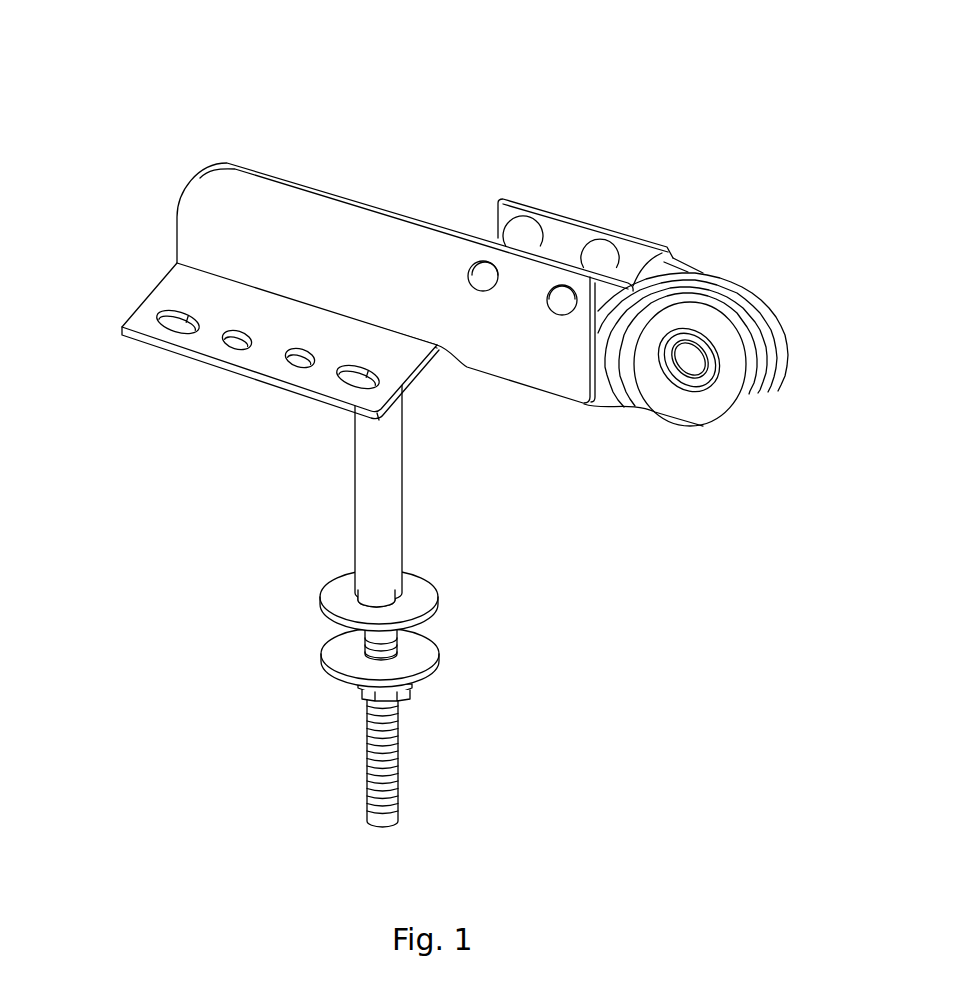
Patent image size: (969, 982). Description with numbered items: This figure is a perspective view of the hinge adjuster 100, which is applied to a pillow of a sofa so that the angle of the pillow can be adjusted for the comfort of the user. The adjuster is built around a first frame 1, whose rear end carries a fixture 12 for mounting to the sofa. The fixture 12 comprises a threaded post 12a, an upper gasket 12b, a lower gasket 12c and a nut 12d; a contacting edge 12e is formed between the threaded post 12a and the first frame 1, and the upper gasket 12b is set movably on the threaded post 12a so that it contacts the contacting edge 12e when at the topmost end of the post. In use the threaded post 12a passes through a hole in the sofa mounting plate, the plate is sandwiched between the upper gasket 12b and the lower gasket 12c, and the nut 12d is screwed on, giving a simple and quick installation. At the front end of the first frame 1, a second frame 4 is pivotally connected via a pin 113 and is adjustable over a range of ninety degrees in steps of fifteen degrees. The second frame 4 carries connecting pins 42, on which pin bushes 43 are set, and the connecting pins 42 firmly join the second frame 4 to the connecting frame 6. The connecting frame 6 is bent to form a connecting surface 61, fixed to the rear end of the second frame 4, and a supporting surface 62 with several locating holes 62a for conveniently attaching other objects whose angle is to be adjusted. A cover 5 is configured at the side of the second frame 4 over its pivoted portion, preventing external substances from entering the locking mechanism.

The hinge adjuster 100 is at (178, 48).
The first frame 1 is at (388, 493).
The pin 113 is at (691, 362).
The fixture 12 is at (232, 577).
The threaded post 12a is at (373, 738).
The upper gasket 12b is at (350, 613).
The lower gasket 12c is at (347, 658).
The nut 12d is at (362, 693).
The contacting edge 12e is at (368, 593).
The second frame 4 is at (662, 252).
The connecting pins 42 is at (558, 305).
The pin bushes 43 is at (597, 253).
The cover 5 is at (725, 400).
The connecting frame 6 is at (155, 116).
The connecting surface 61 is at (245, 257).
The supporting surface 62 is at (205, 300).
The locating holes 62a is at (173, 313).